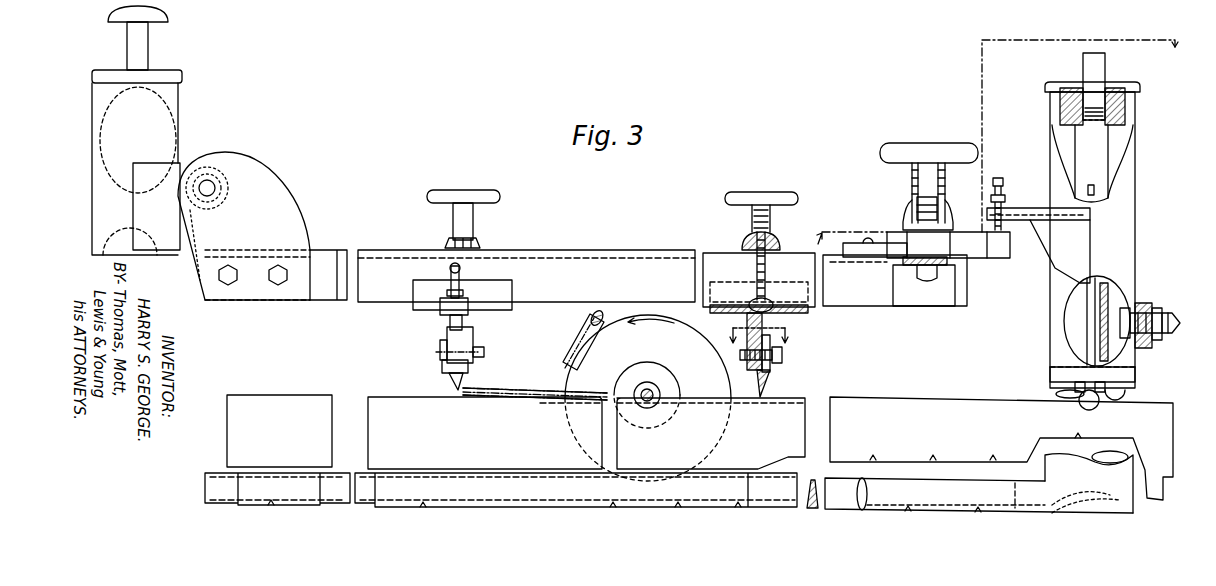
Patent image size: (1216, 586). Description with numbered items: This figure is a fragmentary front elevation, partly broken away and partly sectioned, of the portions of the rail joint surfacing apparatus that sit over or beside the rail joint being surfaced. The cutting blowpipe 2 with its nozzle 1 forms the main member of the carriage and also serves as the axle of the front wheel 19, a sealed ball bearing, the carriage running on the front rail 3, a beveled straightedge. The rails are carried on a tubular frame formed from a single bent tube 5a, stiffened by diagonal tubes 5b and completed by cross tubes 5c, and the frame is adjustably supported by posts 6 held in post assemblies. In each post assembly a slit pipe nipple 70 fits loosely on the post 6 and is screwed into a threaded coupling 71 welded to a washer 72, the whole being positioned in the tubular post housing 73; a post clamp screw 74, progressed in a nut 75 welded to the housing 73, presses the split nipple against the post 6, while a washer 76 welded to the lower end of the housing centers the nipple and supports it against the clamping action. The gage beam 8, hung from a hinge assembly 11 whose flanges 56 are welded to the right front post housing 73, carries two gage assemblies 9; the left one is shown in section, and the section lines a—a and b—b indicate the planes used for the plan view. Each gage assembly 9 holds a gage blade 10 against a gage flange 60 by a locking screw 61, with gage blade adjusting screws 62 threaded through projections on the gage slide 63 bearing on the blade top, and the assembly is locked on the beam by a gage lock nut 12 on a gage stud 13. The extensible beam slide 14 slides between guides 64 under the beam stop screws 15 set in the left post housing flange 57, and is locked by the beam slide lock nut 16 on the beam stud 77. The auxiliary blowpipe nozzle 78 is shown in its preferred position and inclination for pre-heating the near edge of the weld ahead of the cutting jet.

The nozzle 1 is at (662, 391).
The cutting blowpipe 2 is at (626, 373).
The front rail 3 is at (823, 468).
The bent tube 5a is at (1050, 385).
The diagonal tubes 5b is at (178, 118).
The cross tubes 5c is at (863, 480).
The post 6 is at (1078, 323).
The gage beam 8 is at (320, 300).
The gage assembly 9 is at (450, 190).
The gage blade 10 is at (455, 385).
The hinge assembly 11 is at (244, 226).
The gage lock nut 12 is at (480, 244).
The gage stud 13 is at (755, 273).
The beam slide 14 is at (980, 258).
The beam stop screws 15 is at (998, 180).
The beam slide lock nut 16 is at (926, 215).
The front wheel 19 is at (651, 331).
The hinge flanges 56 is at (156, 206).
The left post housing flange 57 is at (1040, 208).
The gage flange 60 is at (474, 341).
The locking screw 61 is at (484, 354).
The gage blade adjusting screws 62 is at (455, 266).
The gage slide 63 is at (424, 311).
The guides 64 is at (855, 243).
The pipe nipple 70 is at (1112, 292).
The threaded coupling 71 is at (1125, 106).
The washer 72 is at (1138, 86).
The post housing 73 is at (182, 97).
The post clamp screw 74 is at (1160, 313).
The nut 75 is at (1152, 340).
The washer 76 is at (1135, 386).
The beam stud 77 is at (921, 190).
The auxiliary blowpipe nozzle 78 is at (580, 336).
The section line a— a is at (759, 341).
The section line b— b is at (990, 146).